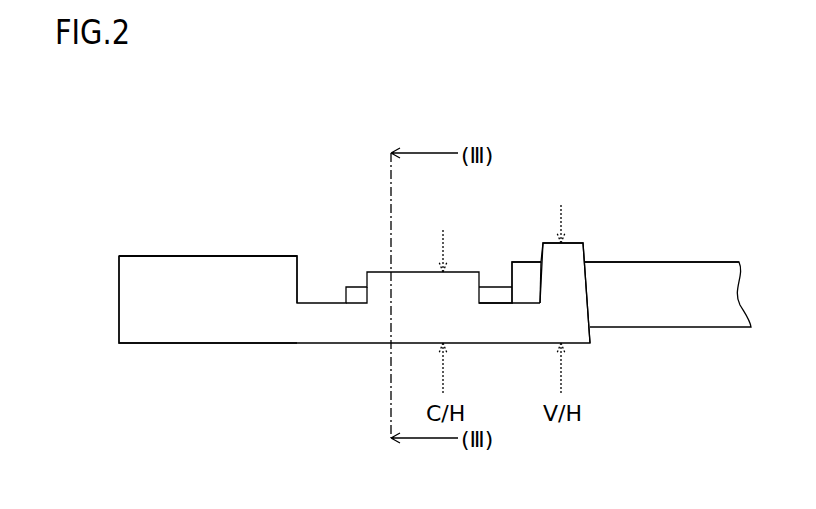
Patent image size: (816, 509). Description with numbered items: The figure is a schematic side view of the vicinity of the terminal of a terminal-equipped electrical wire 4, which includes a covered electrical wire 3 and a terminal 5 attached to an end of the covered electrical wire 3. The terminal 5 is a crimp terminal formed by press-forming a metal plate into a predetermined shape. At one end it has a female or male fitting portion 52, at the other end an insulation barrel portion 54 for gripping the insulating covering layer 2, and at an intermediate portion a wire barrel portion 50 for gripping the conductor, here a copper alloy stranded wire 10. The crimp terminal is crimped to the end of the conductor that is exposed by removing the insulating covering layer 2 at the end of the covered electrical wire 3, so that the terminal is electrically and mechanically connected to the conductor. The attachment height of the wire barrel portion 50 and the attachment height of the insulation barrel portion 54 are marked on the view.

The insulating covering layer 2 is at (642, 315).
The covered electrical wire 3 is at (689, 256).
The terminal-equipped electrical wire 4 is at (522, 243).
The terminal 5 is at (291, 251).
The copper alloy stranded wire 10 is at (497, 303).
The wire barrel portion 50 is at (428, 278).
The fitting portion 52 is at (182, 258).
The insulation barrel portion 54 is at (578, 243).